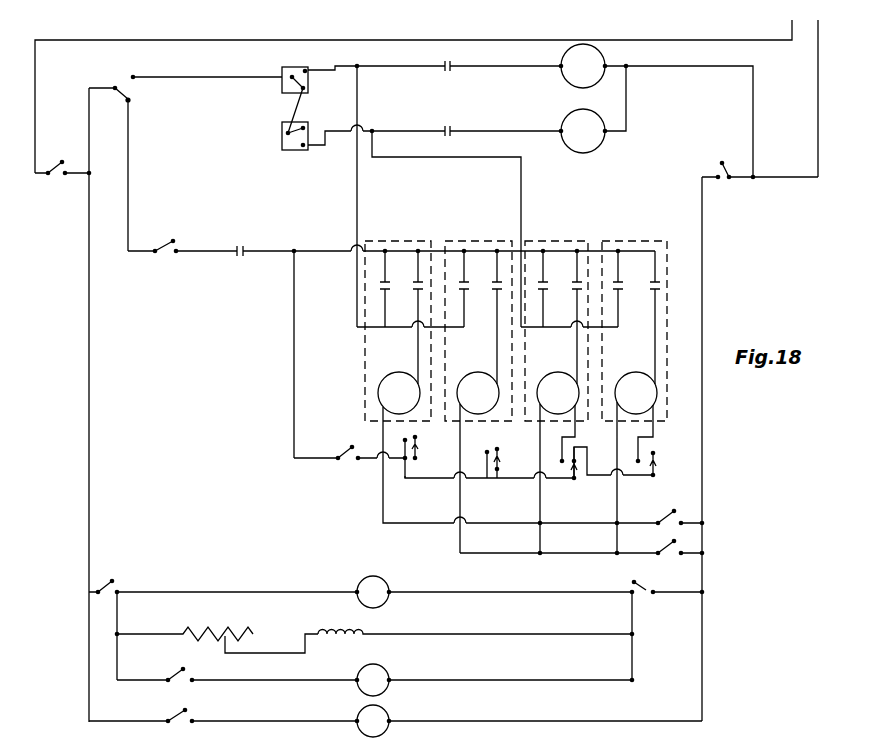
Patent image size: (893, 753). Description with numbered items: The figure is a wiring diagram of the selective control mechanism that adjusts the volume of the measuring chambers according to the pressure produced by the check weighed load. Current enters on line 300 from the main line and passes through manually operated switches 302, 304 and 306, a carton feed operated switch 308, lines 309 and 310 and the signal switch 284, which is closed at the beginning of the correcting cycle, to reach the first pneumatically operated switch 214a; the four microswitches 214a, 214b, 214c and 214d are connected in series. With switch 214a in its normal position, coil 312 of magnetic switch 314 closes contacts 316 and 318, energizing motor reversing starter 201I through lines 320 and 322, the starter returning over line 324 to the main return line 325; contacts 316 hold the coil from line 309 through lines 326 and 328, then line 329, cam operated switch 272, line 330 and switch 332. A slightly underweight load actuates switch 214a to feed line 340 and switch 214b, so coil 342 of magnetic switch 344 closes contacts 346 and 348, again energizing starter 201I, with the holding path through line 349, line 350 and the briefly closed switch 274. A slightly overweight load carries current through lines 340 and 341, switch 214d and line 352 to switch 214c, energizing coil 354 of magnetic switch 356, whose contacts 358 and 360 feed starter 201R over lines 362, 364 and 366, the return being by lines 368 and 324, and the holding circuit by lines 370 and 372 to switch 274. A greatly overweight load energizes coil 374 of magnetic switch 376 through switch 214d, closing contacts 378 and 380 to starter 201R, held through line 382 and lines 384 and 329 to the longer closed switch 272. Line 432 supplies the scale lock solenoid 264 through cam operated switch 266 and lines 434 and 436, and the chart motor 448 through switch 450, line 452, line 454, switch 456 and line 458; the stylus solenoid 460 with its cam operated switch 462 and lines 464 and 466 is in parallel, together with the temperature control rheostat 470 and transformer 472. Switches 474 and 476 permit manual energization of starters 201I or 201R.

The line 300 is at (400, 42).
The manually operated switch 302 is at (80, 186).
The manual correction switch 304 is at (114, 78).
The manually operated switch 306 is at (162, 267).
The carton feed operated switch 308 is at (237, 266).
The line 309 is at (280, 250).
The line 310 is at (294, 355).
The coil 312 is at (378, 393).
The magnetic switch 314 is at (400, 250).
The contacts 316 is at (415, 288).
The contacts 318 is at (383, 284).
The line 320 is at (356, 173).
The line 322 is at (390, 68).
The line 324 is at (753, 115).
The main return line 325 is at (818, 150).
The line 326 is at (410, 250).
The line 328 is at (415, 327).
The line 329 is at (381, 510).
The line 330 is at (704, 455).
The manually operated switch 332 is at (735, 188).
The line 340 is at (403, 477).
The line 341 is at (527, 483).
The coil 342 is at (470, 378).
The magnetic switch 344 is at (478, 240).
The contacts 346 is at (512, 250).
The contacts 348 is at (492, 250).
The line 349 is at (497, 330).
The line 350 is at (497, 553).
The line 352 is at (640, 476).
The coil 354 is at (657, 395).
The magnetic switch 356 is at (668, 248).
The contacts 358 is at (668, 289).
The contacts 360 is at (636, 296).
The line 362 is at (530, 323).
The line 364 is at (478, 161).
The line 366 is at (470, 131).
The line 368 is at (628, 96).
The line 370 is at (657, 315).
The line 372 is at (619, 495).
The coil 374 is at (548, 378).
The magnetic switch 376 is at (586, 250).
The contacts 378 is at (600, 250).
The contacts 380 is at (570, 250).
The line 382 is at (580, 368).
The line 384 is at (540, 457).
The line 432 is at (89, 518).
The line 434 is at (300, 723).
The line 436 is at (480, 722).
The chart motor 448 is at (387, 586).
The switch 450 is at (127, 585).
The line 452 is at (238, 592).
The line 454 is at (483, 592).
The switch 456 is at (648, 598).
The line 458 is at (678, 594).
The stylus solenoid 460 is at (387, 674).
The cam operated switch 462 is at (198, 679).
The line 464 is at (300, 682).
The line 466 is at (480, 682).
The temperature control rheostat 470 is at (225, 631).
The transformer 472 is at (365, 632).
The switch 474 is at (281, 85).
The switch 476 is at (281, 143).
The motor reversing starter 201I is at (590, 48).
The motor reversing starter 201R is at (600, 142).
The pneumatically operated switch 214a is at (392, 448).
The pneumatically operated switch 214b is at (460, 478).
The pneumatically operated switch 214c is at (658, 448).
The pneumatically operated switch 214d is at (559, 472).
The scale lock solenoid 264 is at (382, 713).
The cam operated switch 266 is at (178, 728).
The cam operated switch 272 is at (696, 516).
The cam operated switch 274 is at (696, 551).
The signal switch 284 is at (348, 470).